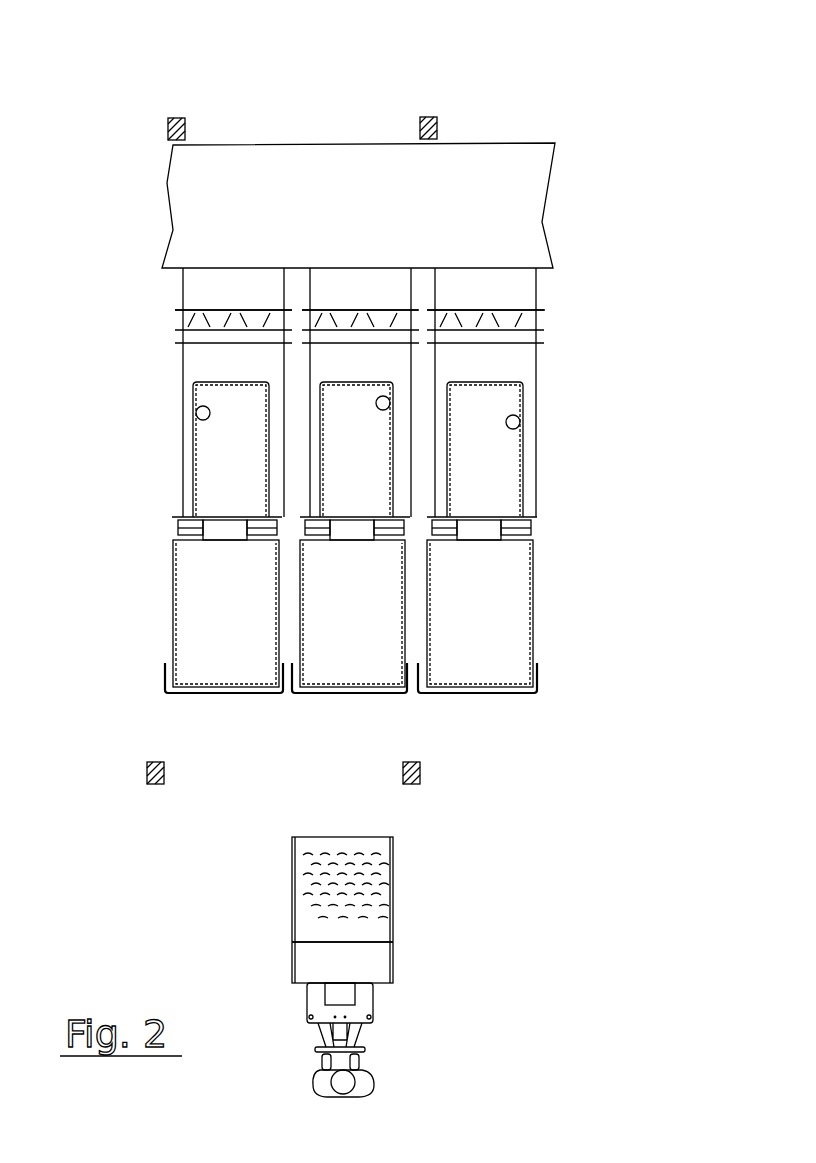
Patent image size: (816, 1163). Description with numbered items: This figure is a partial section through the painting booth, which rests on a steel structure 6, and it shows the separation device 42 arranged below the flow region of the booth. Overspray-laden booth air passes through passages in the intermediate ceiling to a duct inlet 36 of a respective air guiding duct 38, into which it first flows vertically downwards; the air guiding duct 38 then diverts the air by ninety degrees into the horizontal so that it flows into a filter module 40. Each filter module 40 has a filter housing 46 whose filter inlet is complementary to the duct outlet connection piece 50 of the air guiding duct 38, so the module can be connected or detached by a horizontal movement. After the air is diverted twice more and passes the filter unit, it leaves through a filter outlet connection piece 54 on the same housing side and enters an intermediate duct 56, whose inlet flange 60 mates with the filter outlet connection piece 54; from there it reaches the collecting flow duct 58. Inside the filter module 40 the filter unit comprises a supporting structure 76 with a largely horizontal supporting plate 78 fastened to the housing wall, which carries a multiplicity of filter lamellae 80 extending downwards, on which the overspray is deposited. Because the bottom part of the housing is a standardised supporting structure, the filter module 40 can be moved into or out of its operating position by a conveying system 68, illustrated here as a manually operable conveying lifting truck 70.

The steel structure 6 is at (433, 113).
The duct inlet 36 is at (197, 417).
The air guiding duct 38 is at (190, 480).
The filter module 40 is at (166, 630).
The separation device 42 is at (552, 387).
The filter housing 46 is at (166, 655).
The duct outlet connection piece 50 is at (230, 532).
The filter outlet connection piece 54 is at (180, 536).
The intermediate duct 56 is at (217, 288).
The collecting flow duct 58 is at (518, 203).
The inlet flange 60 is at (186, 527).
The conveying system 68 is at (334, 1044).
The conveying lifting truck 70 is at (379, 1001).
The supporting structure 76 is at (318, 928).
The supporting plate 78 is at (302, 917).
The filter lamellae 80 is at (303, 882).